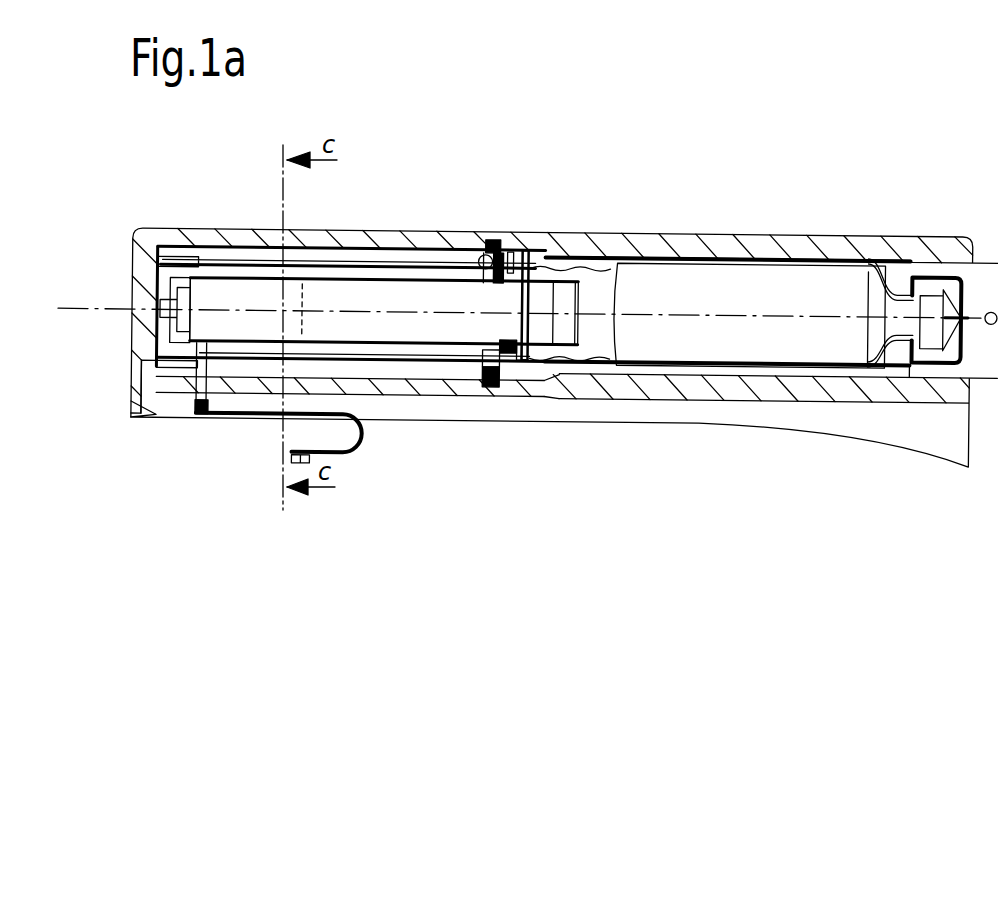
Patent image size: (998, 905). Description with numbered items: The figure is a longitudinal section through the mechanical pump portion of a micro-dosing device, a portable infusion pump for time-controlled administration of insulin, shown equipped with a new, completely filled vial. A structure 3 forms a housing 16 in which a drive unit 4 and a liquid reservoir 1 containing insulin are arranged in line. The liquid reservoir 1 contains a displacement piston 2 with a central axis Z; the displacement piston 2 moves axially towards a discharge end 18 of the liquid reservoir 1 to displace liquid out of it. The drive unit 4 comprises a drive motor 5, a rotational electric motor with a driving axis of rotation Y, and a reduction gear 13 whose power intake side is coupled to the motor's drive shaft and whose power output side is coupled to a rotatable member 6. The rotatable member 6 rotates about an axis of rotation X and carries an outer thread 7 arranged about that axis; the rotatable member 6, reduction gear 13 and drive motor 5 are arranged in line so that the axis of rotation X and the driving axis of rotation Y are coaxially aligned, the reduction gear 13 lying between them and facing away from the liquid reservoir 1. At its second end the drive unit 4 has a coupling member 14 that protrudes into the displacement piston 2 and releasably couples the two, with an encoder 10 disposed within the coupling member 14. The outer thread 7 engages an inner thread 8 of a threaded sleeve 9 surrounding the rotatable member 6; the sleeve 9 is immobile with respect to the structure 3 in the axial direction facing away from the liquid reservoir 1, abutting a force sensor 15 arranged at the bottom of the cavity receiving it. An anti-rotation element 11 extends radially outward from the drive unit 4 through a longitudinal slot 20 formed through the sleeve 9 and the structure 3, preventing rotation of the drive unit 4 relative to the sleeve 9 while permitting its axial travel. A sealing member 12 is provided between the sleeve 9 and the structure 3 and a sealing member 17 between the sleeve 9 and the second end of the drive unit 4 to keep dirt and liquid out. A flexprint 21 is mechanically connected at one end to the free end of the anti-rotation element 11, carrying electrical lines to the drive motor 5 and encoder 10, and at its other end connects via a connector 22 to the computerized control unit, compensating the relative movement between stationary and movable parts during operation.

The liquid reservoir 1 is at (775, 300).
The displacement piston 2 is at (618, 290).
The structure 3 is at (888, 250).
The drive unit 4 is at (375, 278).
The drive motor 5 is at (350, 323).
The rotatable member 6 is at (167, 273).
The outer thread 7 is at (173, 247).
The inner thread 8 is at (478, 378).
The threaded sleeve 9 is at (352, 256).
The encoder 10 is at (553, 310).
The anti-rotation element 11 is at (207, 413).
The sealing member 12 is at (515, 245).
The reduction gear 13 is at (255, 297).
The coupling member 14 is at (560, 280).
The force sensor 15 is at (153, 418).
The housing 16 is at (485, 238).
The sealing member 17 is at (500, 392).
The discharge end 18 is at (925, 378).
The longitudinal slot 20 is at (403, 392).
The flexprint 21 is at (353, 458).
The connector 22 is at (302, 466).
The axis of rotation X is at (83, 310).
The driving axis of rotation Y is at (512, 322).
The central axis Z is at (597, 325).